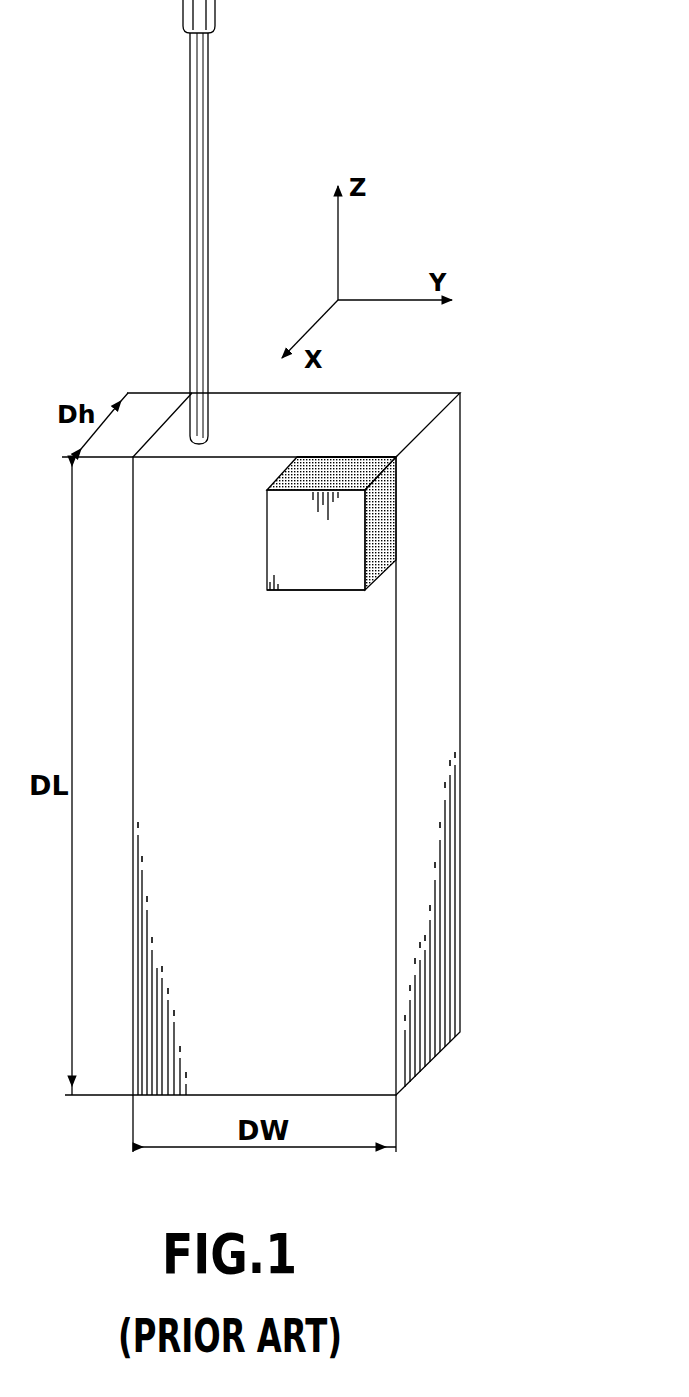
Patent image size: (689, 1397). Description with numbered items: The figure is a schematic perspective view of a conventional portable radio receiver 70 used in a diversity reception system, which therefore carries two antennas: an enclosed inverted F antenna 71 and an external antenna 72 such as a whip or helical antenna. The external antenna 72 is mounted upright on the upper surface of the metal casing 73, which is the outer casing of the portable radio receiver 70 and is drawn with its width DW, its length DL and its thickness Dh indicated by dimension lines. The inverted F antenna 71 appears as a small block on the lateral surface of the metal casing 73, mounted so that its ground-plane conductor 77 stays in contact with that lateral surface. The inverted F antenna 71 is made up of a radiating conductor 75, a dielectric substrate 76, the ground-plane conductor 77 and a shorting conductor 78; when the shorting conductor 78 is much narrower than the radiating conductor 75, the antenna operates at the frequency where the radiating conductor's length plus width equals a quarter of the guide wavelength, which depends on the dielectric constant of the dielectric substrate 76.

The portable radio receiver 70 is at (467, 483).
The inverted F antenna 71 is at (325, 598).
The external antenna 72 is at (192, 220).
The metal casing 73 is at (438, 667).
The radiating conductor 75 is at (345, 567).
The dielectric substrate 76 is at (313, 468).
The ground-plane conductor 77 is at (353, 455).
The shorting conductor 78 is at (383, 478).